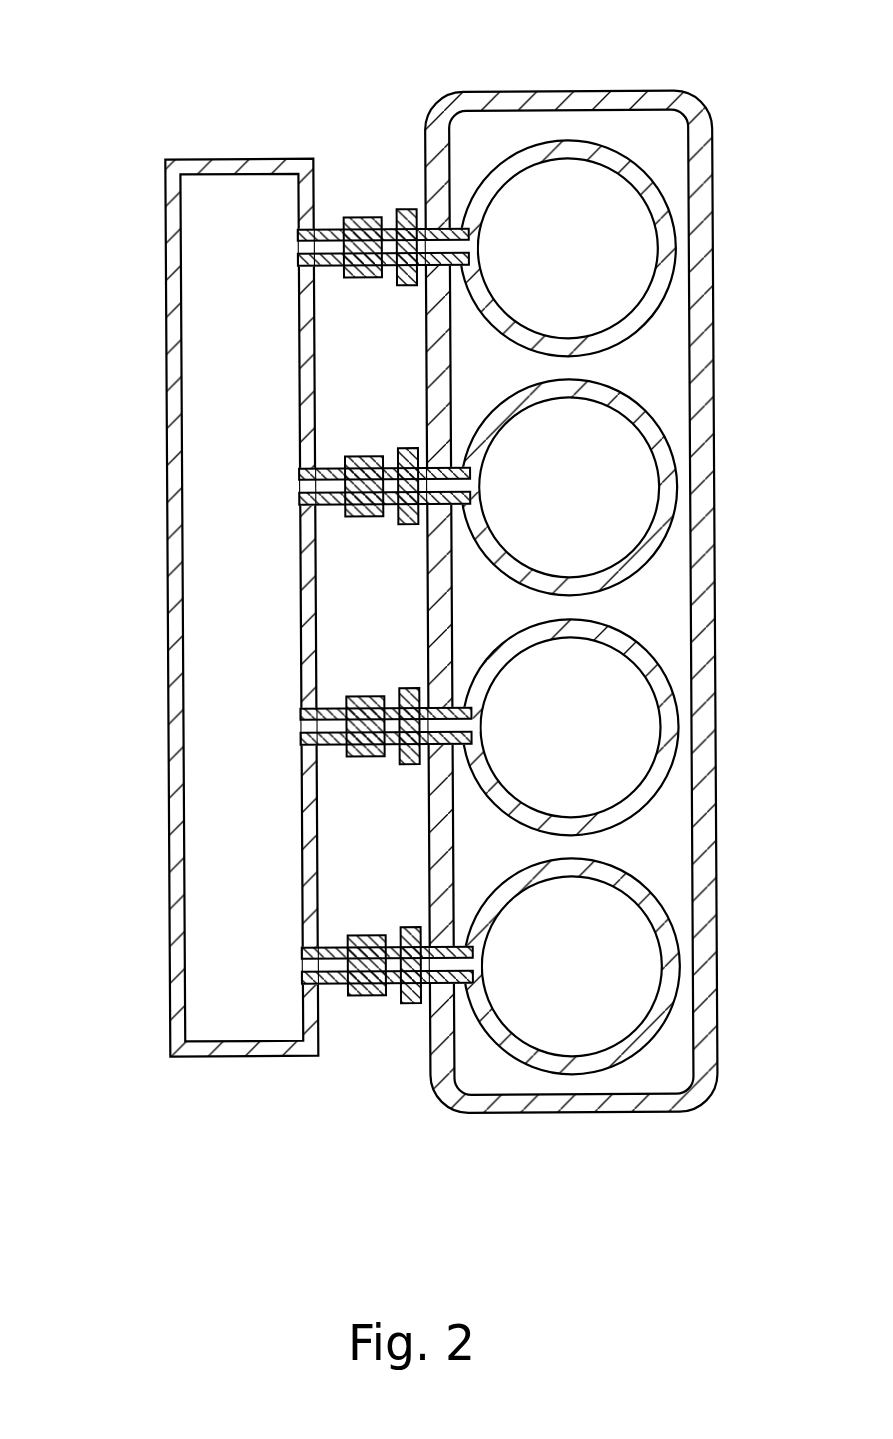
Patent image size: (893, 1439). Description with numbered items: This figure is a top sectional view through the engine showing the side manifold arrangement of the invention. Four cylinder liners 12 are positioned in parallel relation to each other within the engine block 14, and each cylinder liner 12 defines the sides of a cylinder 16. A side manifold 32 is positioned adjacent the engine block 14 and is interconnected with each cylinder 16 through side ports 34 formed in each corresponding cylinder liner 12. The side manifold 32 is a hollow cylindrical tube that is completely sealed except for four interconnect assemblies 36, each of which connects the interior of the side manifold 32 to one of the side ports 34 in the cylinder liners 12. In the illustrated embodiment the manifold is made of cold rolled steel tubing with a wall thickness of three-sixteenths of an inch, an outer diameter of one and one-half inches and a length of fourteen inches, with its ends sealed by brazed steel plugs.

The cylinder liner 12 is at (653, 186).
The engine block 14 is at (613, 92).
The cylinder 16 is at (617, 256).
The side manifold 32 is at (164, 555).
The side port 34 is at (478, 249).
The interconnect assembly 36 is at (369, 162).